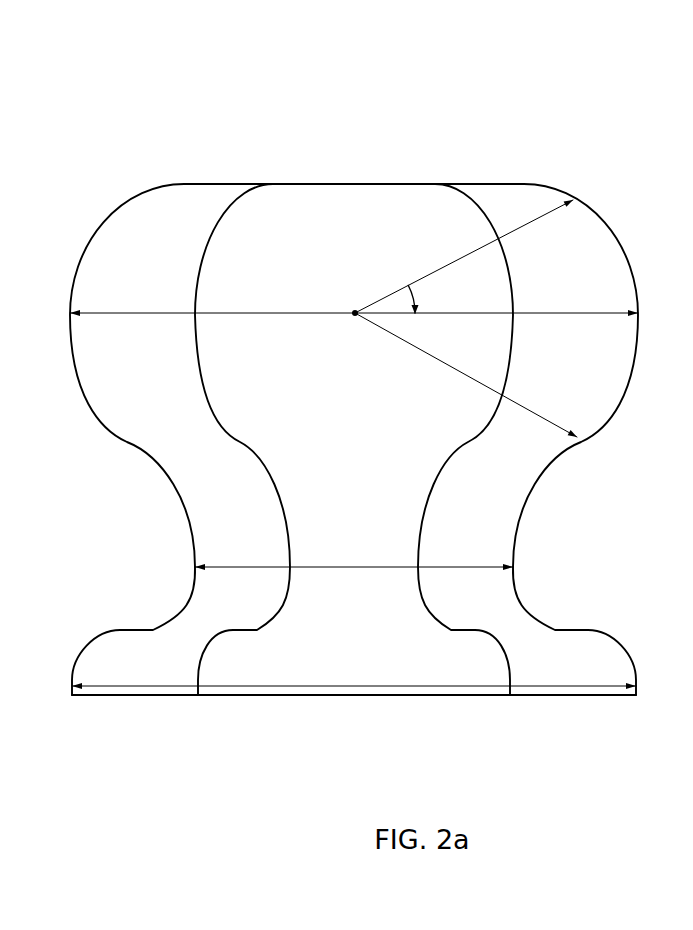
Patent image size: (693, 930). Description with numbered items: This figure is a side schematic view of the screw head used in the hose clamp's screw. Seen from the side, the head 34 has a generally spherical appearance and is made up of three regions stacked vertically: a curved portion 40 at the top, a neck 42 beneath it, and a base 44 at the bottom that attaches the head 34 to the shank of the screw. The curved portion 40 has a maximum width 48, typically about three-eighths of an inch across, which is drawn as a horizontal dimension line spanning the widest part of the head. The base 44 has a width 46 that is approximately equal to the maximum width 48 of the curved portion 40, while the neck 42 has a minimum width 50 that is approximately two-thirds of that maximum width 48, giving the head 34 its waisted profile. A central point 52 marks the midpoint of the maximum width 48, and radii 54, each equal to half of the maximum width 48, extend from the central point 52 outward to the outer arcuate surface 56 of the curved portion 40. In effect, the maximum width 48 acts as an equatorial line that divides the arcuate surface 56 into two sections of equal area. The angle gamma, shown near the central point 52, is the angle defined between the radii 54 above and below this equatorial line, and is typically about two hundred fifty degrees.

The head 34 is at (353, 143).
The curved portion 40 is at (588, 248).
The neck 42 is at (492, 539).
The base 44 is at (602, 657).
The width 46 is at (343, 684).
The maximum width 48 is at (116, 315).
The minimum width 50 is at (344, 570).
The central point 52 is at (353, 310).
The radii 54 is at (462, 250).
The outer arcuate surface 56 is at (640, 292).